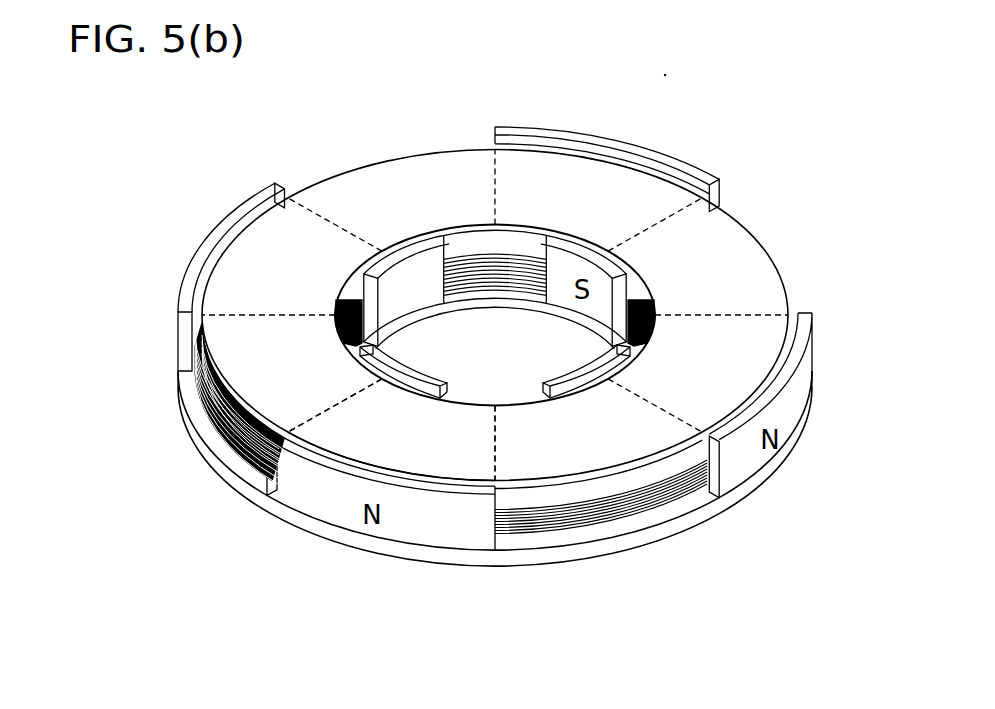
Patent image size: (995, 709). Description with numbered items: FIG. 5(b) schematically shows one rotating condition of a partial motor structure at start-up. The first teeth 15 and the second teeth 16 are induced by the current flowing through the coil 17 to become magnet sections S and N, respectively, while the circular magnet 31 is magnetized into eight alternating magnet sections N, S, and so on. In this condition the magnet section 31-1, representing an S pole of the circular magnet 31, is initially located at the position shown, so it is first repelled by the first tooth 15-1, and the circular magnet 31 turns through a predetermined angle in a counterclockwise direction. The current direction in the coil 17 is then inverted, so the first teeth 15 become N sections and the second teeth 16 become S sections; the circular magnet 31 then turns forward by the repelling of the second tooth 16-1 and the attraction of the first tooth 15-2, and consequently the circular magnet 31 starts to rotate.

The first teeth 15 is at (413, 243).
The first tooth 15-1 is at (393, 367).
The first tooth 15-2 is at (570, 383).
The second teeth 16 is at (677, 163).
The second tooth 16-1 is at (333, 463).
The coil 17 is at (613, 520).
The circular magnet 31 is at (720, 240).
The magnet section 31-1 is at (450, 460).